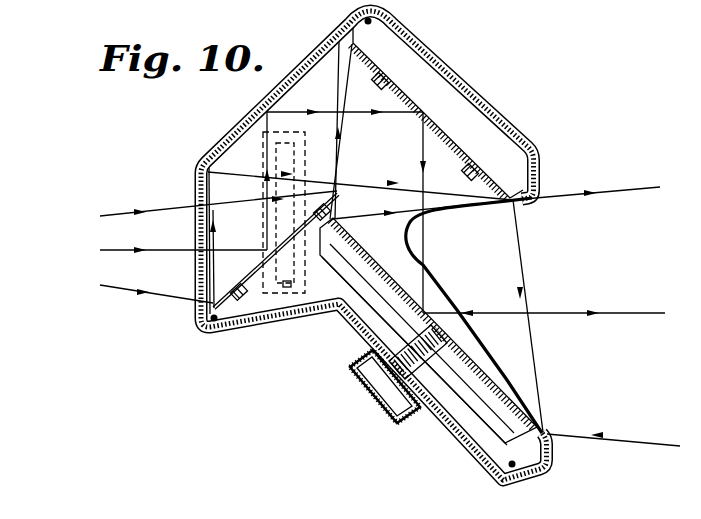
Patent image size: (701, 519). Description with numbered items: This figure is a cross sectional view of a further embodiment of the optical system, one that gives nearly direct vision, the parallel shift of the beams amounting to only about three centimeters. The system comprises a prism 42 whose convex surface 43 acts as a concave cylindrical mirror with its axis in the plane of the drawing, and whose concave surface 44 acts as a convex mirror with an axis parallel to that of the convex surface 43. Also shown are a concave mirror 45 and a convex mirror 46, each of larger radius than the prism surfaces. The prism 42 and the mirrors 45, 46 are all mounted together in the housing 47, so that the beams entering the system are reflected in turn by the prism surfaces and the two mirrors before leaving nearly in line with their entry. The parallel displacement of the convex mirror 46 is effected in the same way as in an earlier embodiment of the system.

The prism 42 is at (230, 235).
The convex surface 43 is at (254, 277).
The concave surface 44 is at (249, 110).
The concave mirror 45 is at (447, 107).
The convex mirror 46 is at (493, 410).
The housing 47 is at (353, 323).